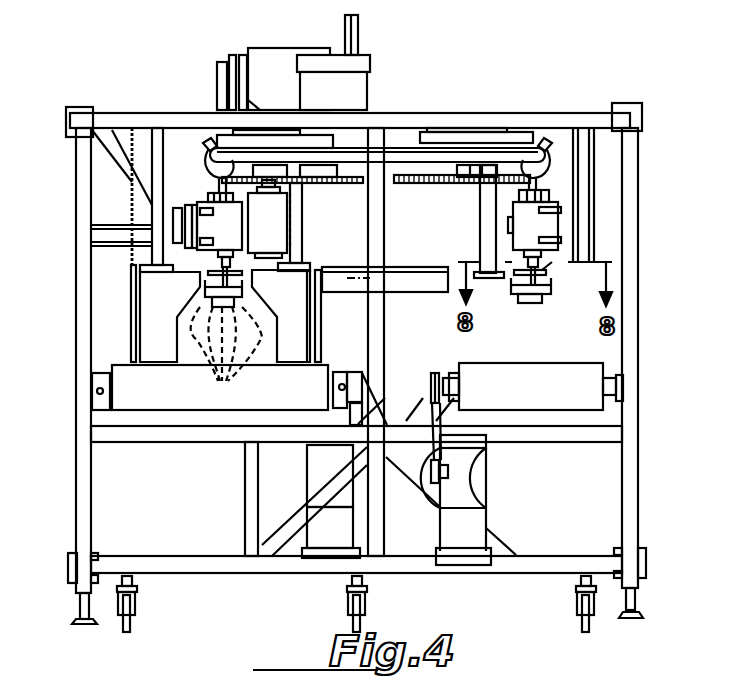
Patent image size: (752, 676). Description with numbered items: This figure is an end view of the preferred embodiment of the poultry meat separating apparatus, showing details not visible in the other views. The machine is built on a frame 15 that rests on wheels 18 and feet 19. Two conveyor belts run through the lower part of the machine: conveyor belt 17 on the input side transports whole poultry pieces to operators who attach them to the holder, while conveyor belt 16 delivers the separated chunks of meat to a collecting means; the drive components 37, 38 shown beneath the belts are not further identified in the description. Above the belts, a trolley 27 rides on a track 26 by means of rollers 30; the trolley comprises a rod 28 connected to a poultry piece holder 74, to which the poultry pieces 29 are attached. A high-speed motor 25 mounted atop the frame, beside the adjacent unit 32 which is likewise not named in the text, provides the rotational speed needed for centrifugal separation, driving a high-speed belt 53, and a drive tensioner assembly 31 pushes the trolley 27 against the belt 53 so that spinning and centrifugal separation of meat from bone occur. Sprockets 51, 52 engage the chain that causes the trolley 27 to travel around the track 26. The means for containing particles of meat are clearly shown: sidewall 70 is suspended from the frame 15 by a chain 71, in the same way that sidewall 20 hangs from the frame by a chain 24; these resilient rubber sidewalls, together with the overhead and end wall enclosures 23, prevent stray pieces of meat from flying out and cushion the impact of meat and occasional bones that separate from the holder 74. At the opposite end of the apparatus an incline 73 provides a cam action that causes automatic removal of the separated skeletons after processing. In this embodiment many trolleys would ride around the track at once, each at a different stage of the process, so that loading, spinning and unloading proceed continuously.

The frame 15 is at (628, 258).
The conveyor belt 16 is at (205, 396).
The conveyor belt 17 is at (573, 389).
The wheels 18 is at (136, 620).
The feet 19 is at (78, 620).
The sidewall 20 is at (130, 312).
The overhead and end wall enclosures 23 is at (167, 353).
The chain 24 is at (130, 190).
The high-speed motor 25 is at (352, 91).
The track 26 is at (438, 152).
The trolley 27 is at (212, 222).
The rod 28 is at (214, 268).
The poultry pieces 29 is at (226, 355).
The rollers 30 is at (207, 143).
The drive tensioner assembly 31 is at (186, 228).
The drive unit 32 is at (272, 62).
The conveyor motor 37 is at (472, 538).
The drive belt 38 is at (430, 462).
The sprocket 51 is at (459, 183).
The sprocket 52 is at (360, 185).
The high-speed belt 53 is at (276, 232).
The sidewall 70 is at (320, 332).
The chain 71 is at (316, 232).
The incline 73 is at (360, 291).
The poultry piece holder 74 is at (197, 312).